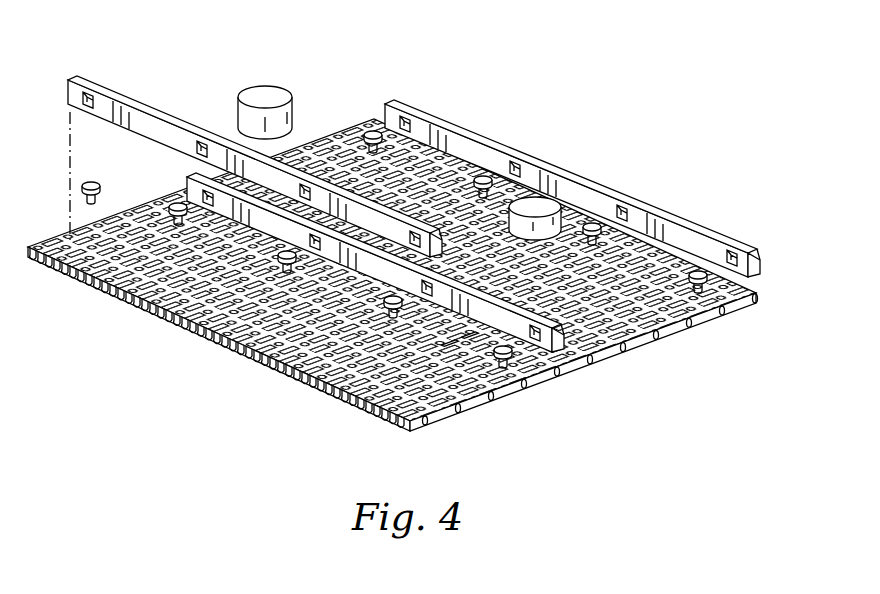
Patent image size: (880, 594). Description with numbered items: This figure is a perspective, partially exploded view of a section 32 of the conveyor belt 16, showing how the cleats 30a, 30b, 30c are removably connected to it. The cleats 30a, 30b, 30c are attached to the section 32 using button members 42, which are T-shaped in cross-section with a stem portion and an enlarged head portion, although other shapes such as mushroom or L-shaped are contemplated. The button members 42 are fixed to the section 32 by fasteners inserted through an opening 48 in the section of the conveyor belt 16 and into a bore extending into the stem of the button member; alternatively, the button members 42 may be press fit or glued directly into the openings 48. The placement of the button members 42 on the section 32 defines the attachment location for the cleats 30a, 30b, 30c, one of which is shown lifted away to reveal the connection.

The conveyor belt 16 is at (245, 361).
The section of the conveyor belt 32 is at (393, 275).
The cleat 30a is at (583, 177).
The cleat 30b is at (558, 348).
The cleat 30c is at (168, 112).
The button member 42 is at (699, 266).
The opening 48 is at (455, 342).